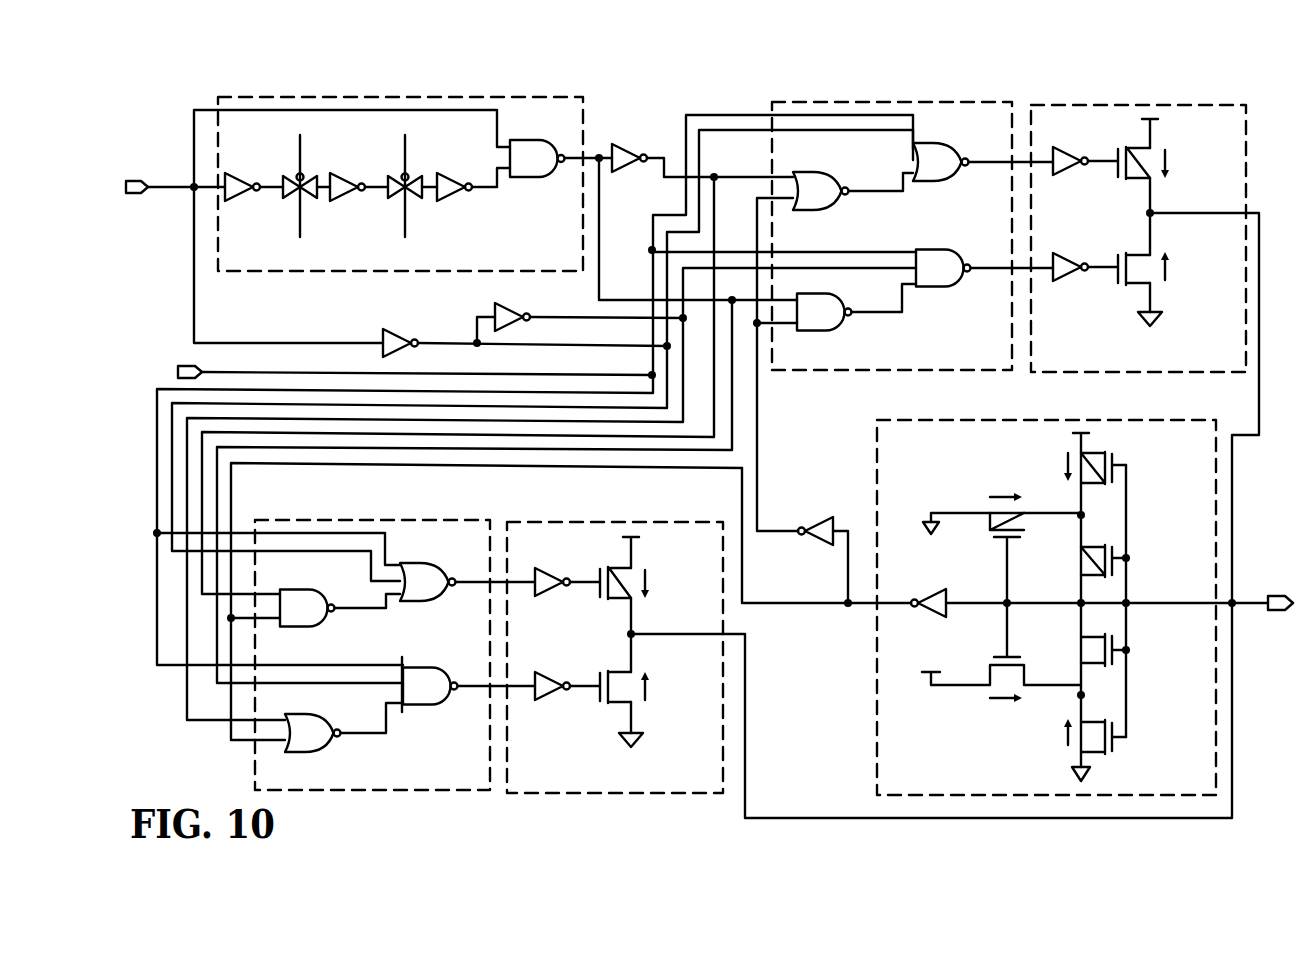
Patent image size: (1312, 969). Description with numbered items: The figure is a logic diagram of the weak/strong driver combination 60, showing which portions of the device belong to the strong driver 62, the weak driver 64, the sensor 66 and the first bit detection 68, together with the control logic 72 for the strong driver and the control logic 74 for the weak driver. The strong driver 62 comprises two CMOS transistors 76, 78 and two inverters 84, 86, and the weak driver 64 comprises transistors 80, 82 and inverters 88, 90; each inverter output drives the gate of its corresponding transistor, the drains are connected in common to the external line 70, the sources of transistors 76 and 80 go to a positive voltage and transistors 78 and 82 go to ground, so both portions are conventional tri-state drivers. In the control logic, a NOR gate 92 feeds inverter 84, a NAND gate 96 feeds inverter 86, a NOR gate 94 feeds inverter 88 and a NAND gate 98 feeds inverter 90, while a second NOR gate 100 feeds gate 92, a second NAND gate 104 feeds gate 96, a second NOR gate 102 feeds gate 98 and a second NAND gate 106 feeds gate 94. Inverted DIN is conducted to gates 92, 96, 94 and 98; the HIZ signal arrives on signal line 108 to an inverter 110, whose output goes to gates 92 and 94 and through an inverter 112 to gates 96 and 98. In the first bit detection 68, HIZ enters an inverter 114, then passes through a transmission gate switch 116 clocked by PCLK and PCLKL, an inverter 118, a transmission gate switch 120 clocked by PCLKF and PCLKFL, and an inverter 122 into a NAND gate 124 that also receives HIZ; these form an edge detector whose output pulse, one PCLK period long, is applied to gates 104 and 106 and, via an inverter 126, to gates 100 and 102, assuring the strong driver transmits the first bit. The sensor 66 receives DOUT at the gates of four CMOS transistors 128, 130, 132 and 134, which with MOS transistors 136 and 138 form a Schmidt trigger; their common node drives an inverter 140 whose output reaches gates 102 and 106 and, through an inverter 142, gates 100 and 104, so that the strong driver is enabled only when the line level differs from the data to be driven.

The weak/strong driver combination 60 is at (531, 833).
The strong driver 62 is at (1036, 105).
The weak driver 64 is at (548, 522).
The sensor 66 is at (877, 432).
The first bit detection 68 is at (498, 97).
The external line 70 is at (1270, 610).
The control logic for strong driver 72 is at (772, 102).
The control logic for weak driver 74 is at (480, 520).
The CMOS transistor 76 is at (1130, 180).
The CMOS transistor 78 is at (1134, 252).
The CMOS transistor 80 is at (618, 600).
The CMOS transistor 82 is at (616, 668).
The inverter 84 is at (1060, 148).
The inverter 86 is at (1072, 282).
The inverter 88 is at (560, 570).
The inverter 90 is at (552, 700).
The NOR gate 92 is at (969, 170).
The NOR gate 94 is at (446, 598).
The NAND gate 96 is at (934, 250).
The NAND gate 98 is at (441, 709).
The second NOR gate 100 is at (826, 176).
The second NOR gate 102 is at (332, 748).
The second NAND gate 104 is at (854, 324).
The second NAND gate 106 is at (322, 596).
The signal line 108 is at (186, 184).
The inverter 110 is at (390, 330).
The inverter 112 is at (486, 305).
The inverter 114 is at (244, 201).
The MOS transmission gate switch 116 is at (283, 178).
The inverter 118 is at (340, 174).
The MOS transmission gate switch 120 is at (390, 178).
The inverter 122 is at (462, 197).
The NAND gate 124 is at (535, 177).
The inverter 126 is at (628, 146).
The CMOS transistor 128 is at (1108, 458).
The CMOS transistor 130 is at (1108, 545).
The CMOS transistor 132 is at (1106, 637).
The CMOS transistor 134 is at (1106, 720).
The MOS transistor 136 is at (1006, 542).
The MOS transistor 138 is at (1004, 664).
The inverter 140 is at (930, 588).
The inverter 142 is at (812, 512).